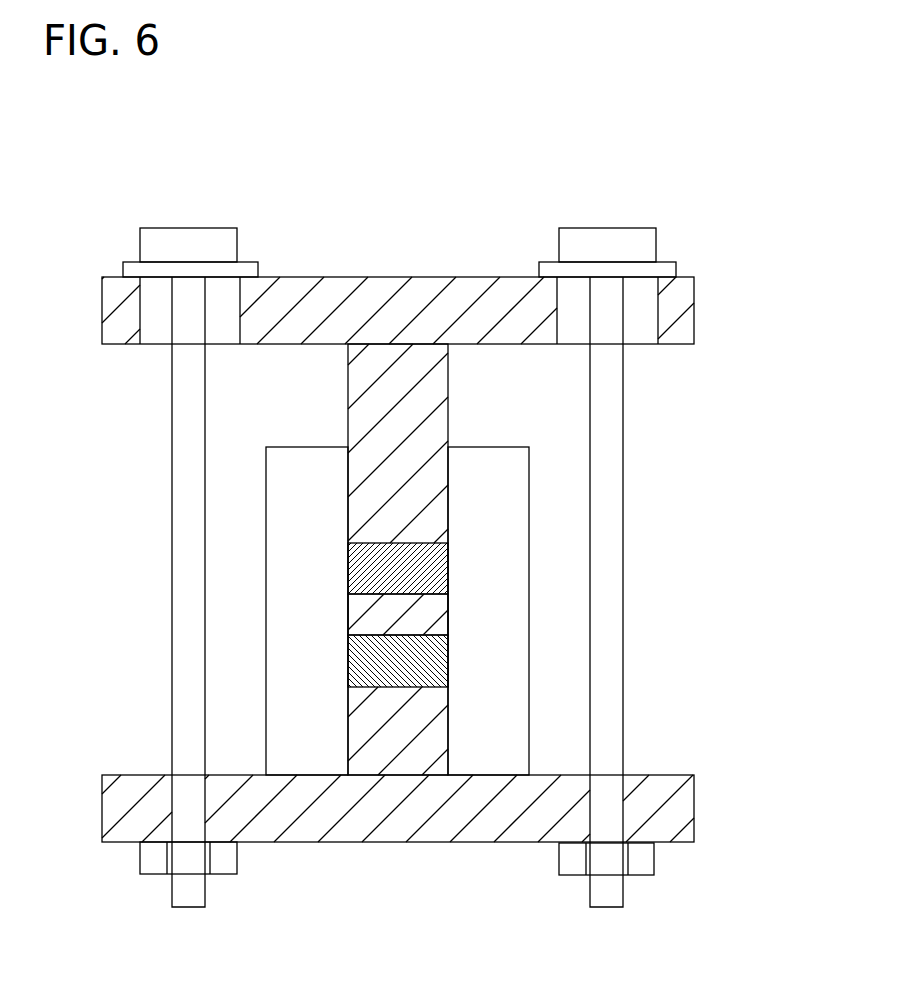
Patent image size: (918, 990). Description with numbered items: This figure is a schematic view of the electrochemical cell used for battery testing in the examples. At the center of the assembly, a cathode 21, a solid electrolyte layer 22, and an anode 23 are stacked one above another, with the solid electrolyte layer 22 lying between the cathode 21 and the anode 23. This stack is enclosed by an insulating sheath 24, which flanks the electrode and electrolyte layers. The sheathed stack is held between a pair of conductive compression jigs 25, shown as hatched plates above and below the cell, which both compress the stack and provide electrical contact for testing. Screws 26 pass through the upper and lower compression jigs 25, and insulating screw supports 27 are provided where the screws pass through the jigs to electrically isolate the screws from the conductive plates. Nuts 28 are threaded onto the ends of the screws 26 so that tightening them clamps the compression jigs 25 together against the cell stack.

The cathode 21 is at (448, 569).
The solid electrolyte layer 22 is at (448, 616).
The anode 23 is at (448, 665).
The insulating sheath 24 is at (486, 447).
The conductive compression jigs 25 is at (477, 520).
The screws 26 is at (217, 227).
The insulating screw supports 27 is at (557, 315).
The nuts 28 is at (560, 845).